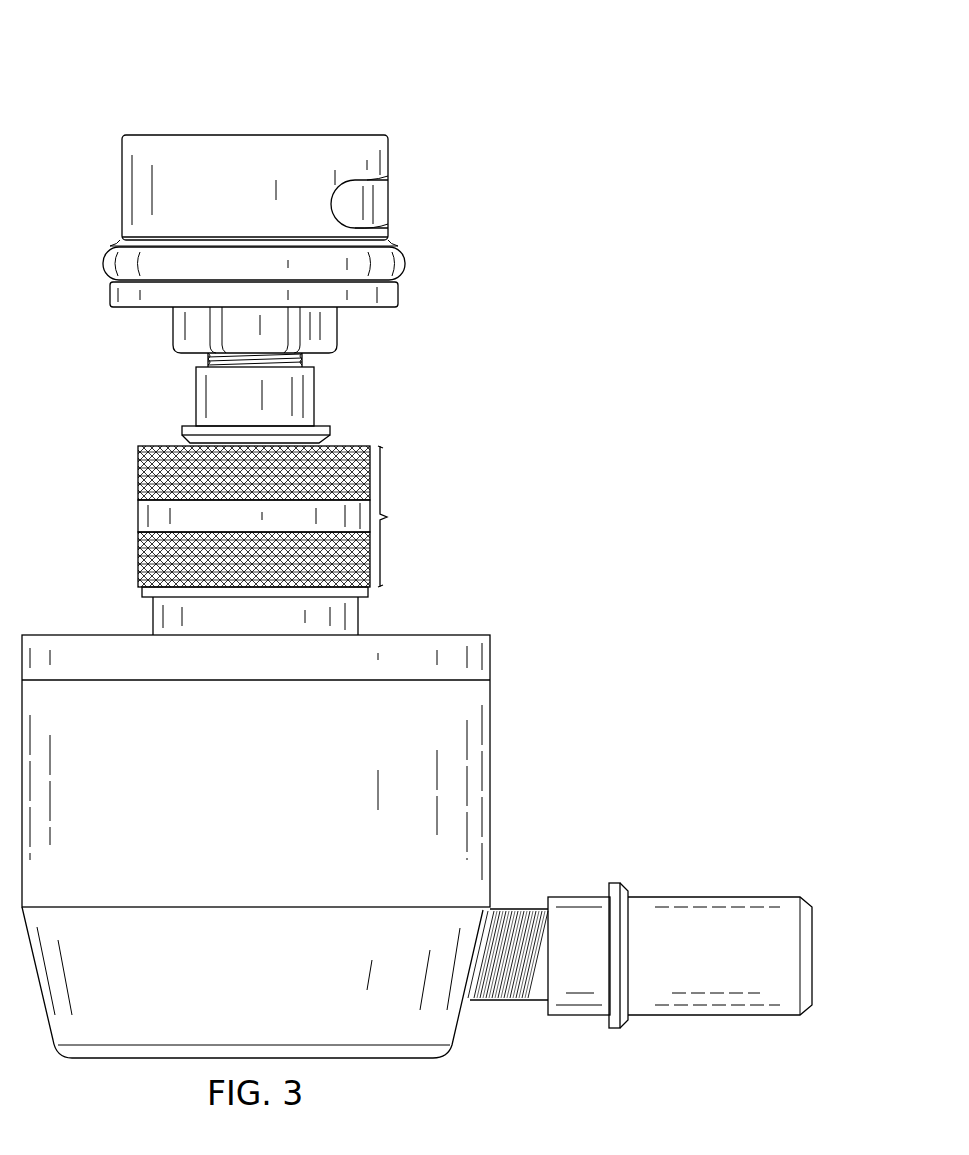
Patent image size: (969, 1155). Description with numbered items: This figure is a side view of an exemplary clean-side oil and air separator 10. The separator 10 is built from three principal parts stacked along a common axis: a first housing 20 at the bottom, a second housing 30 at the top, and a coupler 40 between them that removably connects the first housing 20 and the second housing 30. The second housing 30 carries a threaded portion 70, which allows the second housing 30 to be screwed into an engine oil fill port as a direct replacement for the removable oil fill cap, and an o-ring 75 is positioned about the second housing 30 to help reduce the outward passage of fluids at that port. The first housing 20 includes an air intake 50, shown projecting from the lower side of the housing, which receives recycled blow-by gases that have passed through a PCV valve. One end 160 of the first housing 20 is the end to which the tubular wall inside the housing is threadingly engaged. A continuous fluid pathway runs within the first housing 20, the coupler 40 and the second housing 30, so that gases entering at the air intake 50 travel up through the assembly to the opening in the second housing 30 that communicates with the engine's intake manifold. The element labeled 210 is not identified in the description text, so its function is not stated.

The clean-side oil and air separator 10 is at (572, 106).
The first housing 20 is at (491, 793).
The second housing 30 is at (122, 190).
The coupler 40 is at (282, 521).
The air intake 50 is at (707, 1017).
The threaded portion 70 is at (375, 200).
The o-ring 75 is at (405, 268).
The end of first housing 160 is at (407, 1060).
The cylindrical adapter 210 is at (196, 400).